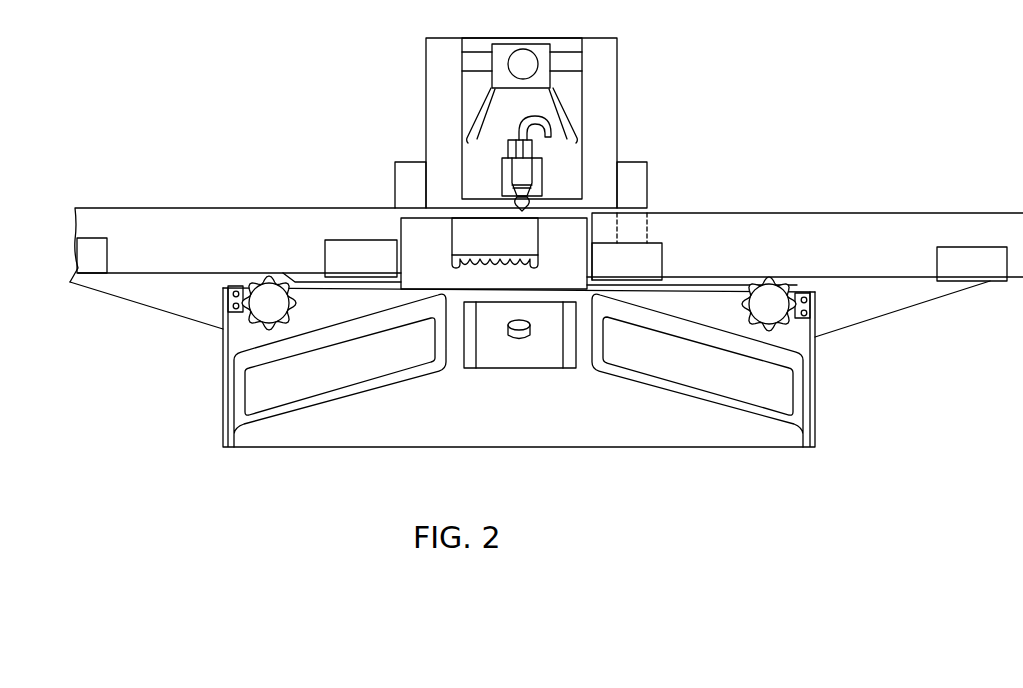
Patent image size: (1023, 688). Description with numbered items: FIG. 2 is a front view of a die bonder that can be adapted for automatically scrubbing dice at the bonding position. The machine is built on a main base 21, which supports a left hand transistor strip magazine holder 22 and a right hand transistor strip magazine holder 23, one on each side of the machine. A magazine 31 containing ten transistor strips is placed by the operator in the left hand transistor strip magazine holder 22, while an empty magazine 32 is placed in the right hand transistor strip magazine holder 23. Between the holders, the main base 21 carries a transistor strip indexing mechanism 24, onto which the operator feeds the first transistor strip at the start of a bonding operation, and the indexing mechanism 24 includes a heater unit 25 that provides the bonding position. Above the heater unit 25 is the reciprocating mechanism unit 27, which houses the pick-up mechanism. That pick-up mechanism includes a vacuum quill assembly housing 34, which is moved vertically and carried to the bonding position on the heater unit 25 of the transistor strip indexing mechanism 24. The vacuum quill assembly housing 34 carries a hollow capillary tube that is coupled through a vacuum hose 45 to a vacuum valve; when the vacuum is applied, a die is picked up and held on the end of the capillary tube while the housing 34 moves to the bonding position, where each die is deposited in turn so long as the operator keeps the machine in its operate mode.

The main base 21 is at (412, 443).
The left hand transistor strip magazine holder 22 is at (178, 308).
The right hand transistor strip magazine holder 23 is at (848, 327).
The transistor strip indexing mechanism 24 is at (401, 224).
The heater unit 25 is at (454, 238).
The reciprocating mechanism unit 27 is at (415, 100).
The magazine 31 is at (231, 208).
The empty magazine 32 is at (837, 213).
The vacuum quill assembly housing 34 is at (512, 166).
The vacuum hose 45 is at (548, 125).